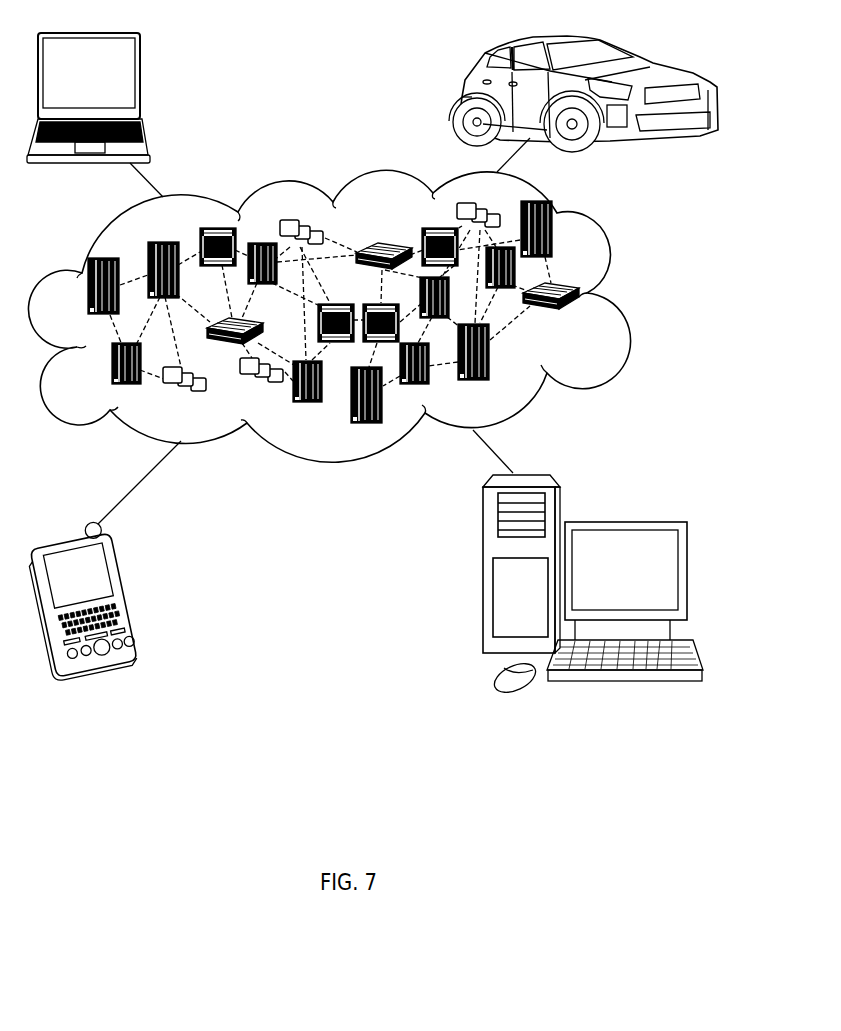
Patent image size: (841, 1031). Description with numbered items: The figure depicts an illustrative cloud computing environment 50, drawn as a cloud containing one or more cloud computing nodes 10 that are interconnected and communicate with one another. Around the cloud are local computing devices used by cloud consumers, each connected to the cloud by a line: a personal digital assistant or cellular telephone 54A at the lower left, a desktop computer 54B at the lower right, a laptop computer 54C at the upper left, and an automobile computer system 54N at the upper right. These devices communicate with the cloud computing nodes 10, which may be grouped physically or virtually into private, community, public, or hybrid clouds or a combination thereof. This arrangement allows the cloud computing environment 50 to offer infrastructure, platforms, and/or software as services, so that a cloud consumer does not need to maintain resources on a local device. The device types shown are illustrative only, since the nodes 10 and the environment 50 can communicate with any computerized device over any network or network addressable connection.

The cloud computing nodes 10 is at (347, 316).
The cloud computing environment 50 is at (622, 301).
The personal digital assistant (PDA) or cellular telephone 54A is at (133, 595).
The desktop computer 54B is at (623, 518).
The laptop computer 54C is at (141, 83).
The automobile computer system 54N is at (460, 92).